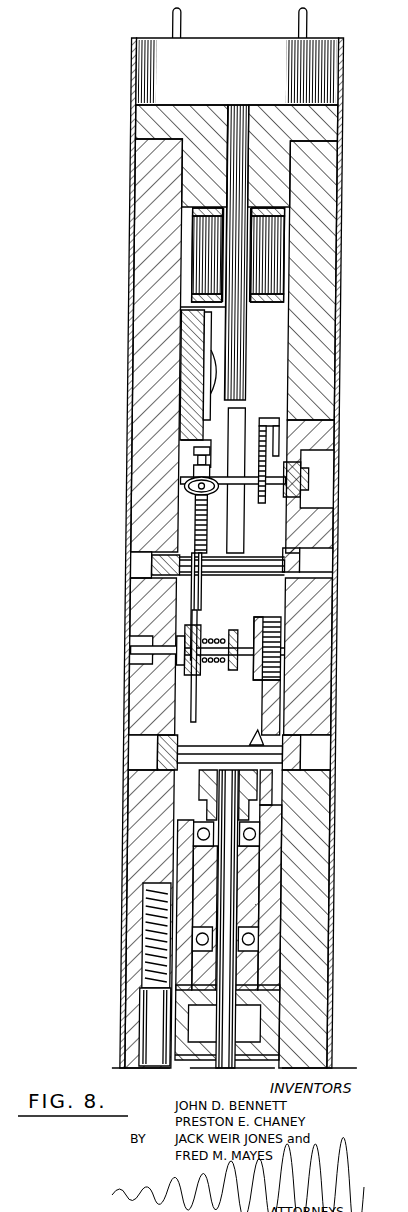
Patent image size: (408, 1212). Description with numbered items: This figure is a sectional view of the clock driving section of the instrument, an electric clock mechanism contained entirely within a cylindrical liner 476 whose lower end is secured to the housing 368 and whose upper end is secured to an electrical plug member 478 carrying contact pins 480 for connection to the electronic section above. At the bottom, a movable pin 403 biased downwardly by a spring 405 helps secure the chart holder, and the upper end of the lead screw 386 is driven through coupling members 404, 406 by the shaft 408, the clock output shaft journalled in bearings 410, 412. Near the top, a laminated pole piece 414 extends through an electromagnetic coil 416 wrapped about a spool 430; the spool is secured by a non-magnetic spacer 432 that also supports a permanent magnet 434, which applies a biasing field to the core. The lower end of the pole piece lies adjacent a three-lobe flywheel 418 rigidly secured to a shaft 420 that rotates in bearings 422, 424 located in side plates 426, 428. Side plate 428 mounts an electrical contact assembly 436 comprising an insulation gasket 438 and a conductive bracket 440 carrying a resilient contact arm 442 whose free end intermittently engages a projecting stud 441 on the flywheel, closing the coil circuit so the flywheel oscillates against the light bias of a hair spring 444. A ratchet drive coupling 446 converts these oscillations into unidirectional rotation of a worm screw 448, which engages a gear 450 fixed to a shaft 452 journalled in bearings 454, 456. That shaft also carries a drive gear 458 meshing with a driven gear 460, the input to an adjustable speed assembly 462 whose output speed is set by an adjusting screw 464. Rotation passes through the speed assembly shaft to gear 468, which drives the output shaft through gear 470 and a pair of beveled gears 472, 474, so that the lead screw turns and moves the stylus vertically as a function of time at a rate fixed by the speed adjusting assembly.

The housing 368 is at (332, 1020).
The lead screw 386 is at (234, 1060).
The movable pin 403 is at (163, 1030).
The coupling member 404 is at (312, 1052).
The spring 405 is at (161, 936).
The coupling member 406 is at (276, 1000).
The shaft 408 is at (238, 893).
The bearing 410 is at (264, 832).
The bearing 412 is at (265, 937).
The laminated pole piece 414 is at (236, 250).
The electromagnetic coil 416 is at (201, 232).
The three-lobe flywheel 418 is at (248, 417).
The shaft 420 is at (274, 508).
The bearing 422 is at (316, 478).
The bearing 424 is at (210, 481).
The side plate 426 is at (319, 378).
The side plate 428 is at (146, 394).
The spool 430 is at (256, 249).
The spacer 432 is at (323, 126).
The permanent magnet 434 is at (240, 157).
The electrical contact assembly 436 is at (176, 353).
The insulation gasket 438 is at (188, 335).
The conductive bracket 440 is at (204, 402).
The projecting stud 441 is at (233, 446).
The resilient contact arm 442 is at (220, 441).
The hair spring 444 is at (270, 440).
The ratchet drive coupling 446 is at (195, 491).
The worm screw 448 is at (206, 522).
The gear 450 is at (210, 600).
The shaft 452 is at (290, 550).
The bearing 454 is at (317, 565).
The bearing 456 is at (171, 575).
The drive gear 458 is at (190, 579).
The driven gear 460 is at (201, 696).
The adjustable speed assembly 462 is at (243, 678).
The adjusting screw 464 is at (146, 647).
The gear 468 is at (279, 642).
The gear 470 is at (286, 700).
The beveled gear 472 is at (268, 735).
The beveled gear 474 is at (254, 785).
The cylindrical liner 476 is at (133, 116).
The electrical plug member 478 is at (266, 84).
The contact pins 480 is at (177, 20).